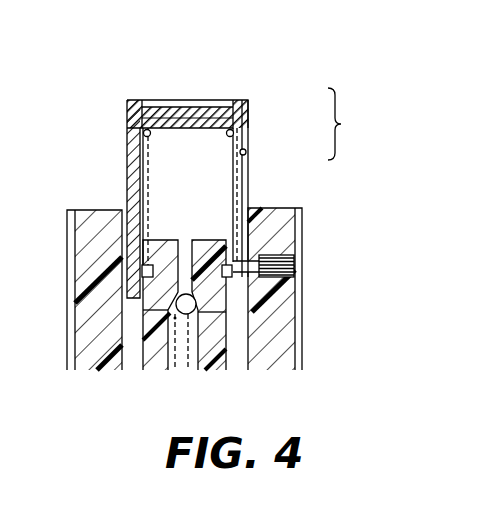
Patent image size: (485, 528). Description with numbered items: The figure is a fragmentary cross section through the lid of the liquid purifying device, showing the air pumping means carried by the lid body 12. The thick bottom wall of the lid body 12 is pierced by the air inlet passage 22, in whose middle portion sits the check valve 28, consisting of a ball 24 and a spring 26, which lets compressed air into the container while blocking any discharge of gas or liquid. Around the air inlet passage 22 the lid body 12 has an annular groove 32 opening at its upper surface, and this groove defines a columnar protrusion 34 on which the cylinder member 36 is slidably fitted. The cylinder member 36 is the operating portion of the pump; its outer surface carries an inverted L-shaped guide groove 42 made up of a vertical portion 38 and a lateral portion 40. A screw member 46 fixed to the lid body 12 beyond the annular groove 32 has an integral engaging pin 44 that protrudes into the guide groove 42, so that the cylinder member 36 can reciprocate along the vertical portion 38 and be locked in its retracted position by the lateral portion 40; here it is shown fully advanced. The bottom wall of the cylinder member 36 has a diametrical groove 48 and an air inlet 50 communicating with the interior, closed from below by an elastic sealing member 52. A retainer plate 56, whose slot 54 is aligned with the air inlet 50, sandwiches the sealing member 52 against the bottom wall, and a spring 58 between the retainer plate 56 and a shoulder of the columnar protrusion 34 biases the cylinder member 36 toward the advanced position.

The lid body 12 is at (320, 279).
The air inlet passage 22 is at (176, 368).
The ball 24 is at (196, 299).
The spring 26 is at (192, 303).
The check valve 28 is at (150, 330).
The annular groove 32 is at (117, 360).
The columnar protrusion 34 is at (217, 364).
The cylinder member 36 is at (235, 102).
The vertical portion 38 is at (247, 187).
The lateral portion 40 is at (246, 156).
The guide groove 42 is at (349, 124).
The engaging pin 44 is at (255, 258).
The screw member 46 is at (296, 264).
The groove 48 is at (200, 105).
The air inlet 50 is at (172, 110).
The sealing member 52 is at (161, 112).
The slot 54 is at (188, 130).
The retainer plate 56 is at (227, 107).
The spring 58 is at (135, 147).